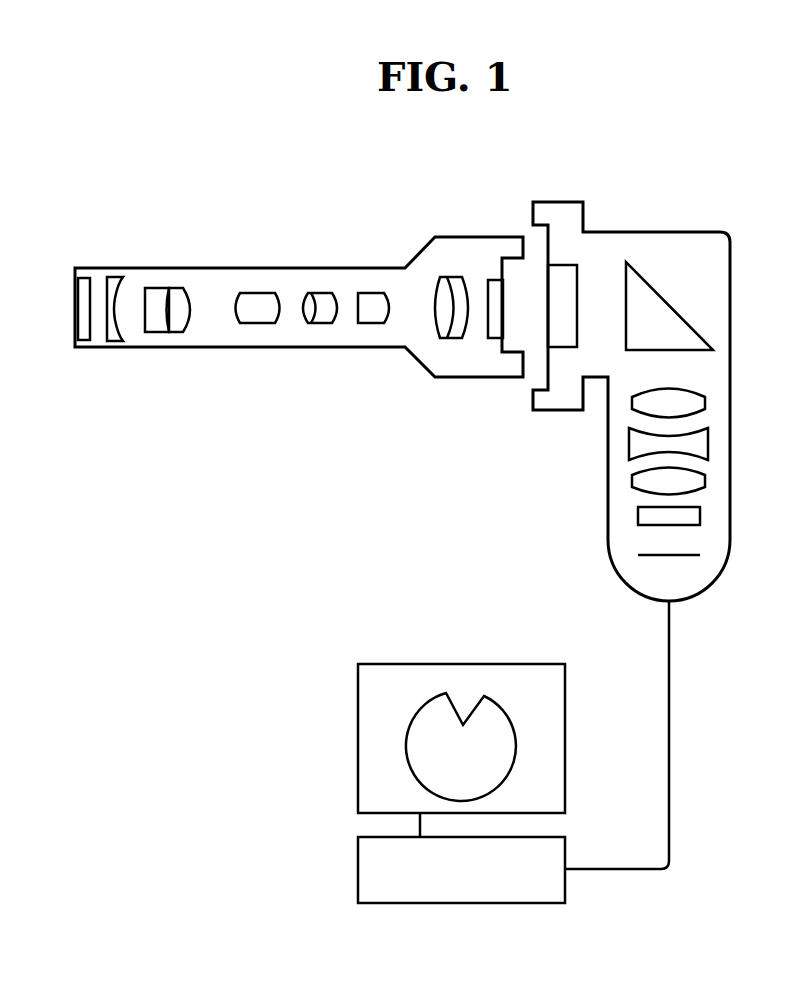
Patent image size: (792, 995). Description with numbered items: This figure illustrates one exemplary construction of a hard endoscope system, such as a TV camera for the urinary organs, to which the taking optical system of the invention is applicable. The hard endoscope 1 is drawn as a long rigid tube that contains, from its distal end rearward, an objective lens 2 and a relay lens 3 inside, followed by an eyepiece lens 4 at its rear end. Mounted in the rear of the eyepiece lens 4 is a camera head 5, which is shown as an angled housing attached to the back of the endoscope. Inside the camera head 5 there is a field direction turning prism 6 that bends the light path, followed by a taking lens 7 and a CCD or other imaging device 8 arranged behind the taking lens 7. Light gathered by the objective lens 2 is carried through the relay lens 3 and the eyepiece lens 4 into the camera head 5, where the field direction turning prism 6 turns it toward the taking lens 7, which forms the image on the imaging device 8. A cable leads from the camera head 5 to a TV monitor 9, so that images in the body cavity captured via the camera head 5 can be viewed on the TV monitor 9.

The hard endoscope 1 is at (267, 268).
The objective lens 2 is at (195, 373).
The relay lens 3 is at (233, 373).
The eyepiece lens 4 is at (432, 412).
The camera head 5 is at (642, 232).
The field direction turning prism 6 is at (680, 305).
The taking lens 7 is at (750, 392).
The imaging device 8 is at (749, 540).
The TV monitor 9 is at (358, 739).